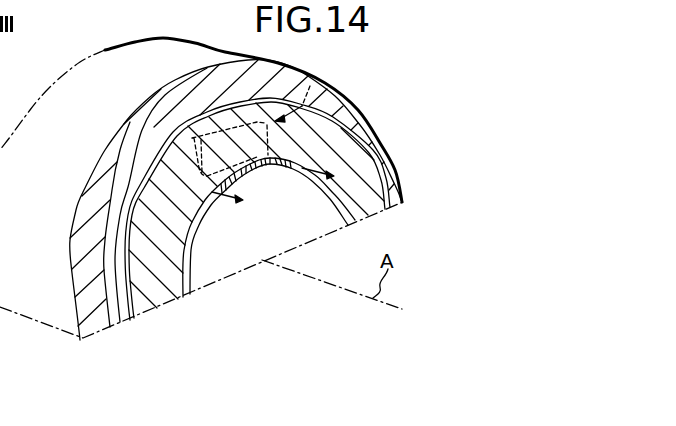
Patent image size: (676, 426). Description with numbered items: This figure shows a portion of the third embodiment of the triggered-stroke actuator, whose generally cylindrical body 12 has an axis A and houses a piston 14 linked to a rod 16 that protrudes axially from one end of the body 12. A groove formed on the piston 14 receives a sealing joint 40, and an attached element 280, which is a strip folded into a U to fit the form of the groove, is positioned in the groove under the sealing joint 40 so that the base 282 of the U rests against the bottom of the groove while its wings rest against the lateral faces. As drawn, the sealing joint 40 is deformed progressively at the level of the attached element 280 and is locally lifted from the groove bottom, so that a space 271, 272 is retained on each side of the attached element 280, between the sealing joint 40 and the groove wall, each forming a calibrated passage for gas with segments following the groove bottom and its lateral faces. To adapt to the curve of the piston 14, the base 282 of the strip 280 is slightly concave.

The body 12 is at (145, 120).
The piston 14 is at (120, 237).
The rod 16 is at (258, 262).
The sealing joint 40 is at (352, 152).
The space forming a calibrated passage for gas 271 is at (210, 190).
The space forming a calibrated passage for gas 272 is at (296, 172).
The attached element 280 is at (310, 86).
The base of the U 282 is at (262, 168).